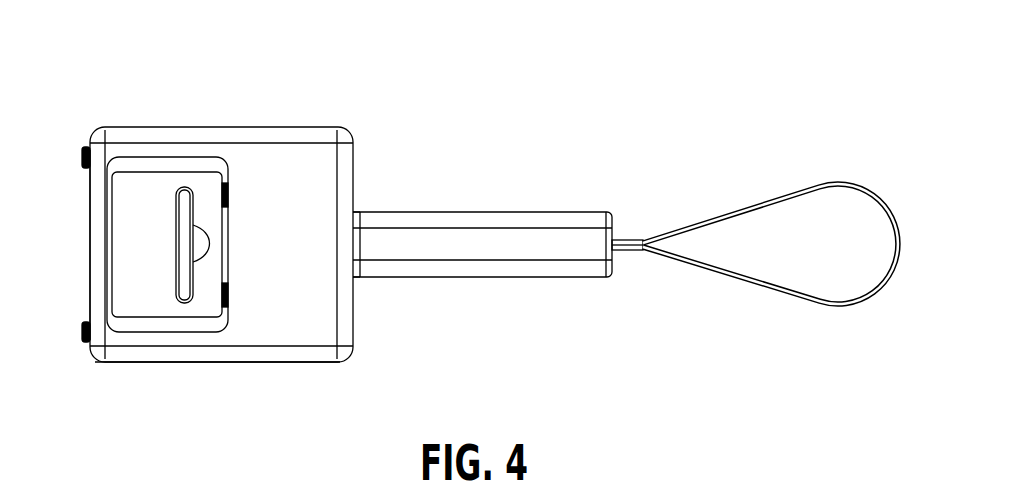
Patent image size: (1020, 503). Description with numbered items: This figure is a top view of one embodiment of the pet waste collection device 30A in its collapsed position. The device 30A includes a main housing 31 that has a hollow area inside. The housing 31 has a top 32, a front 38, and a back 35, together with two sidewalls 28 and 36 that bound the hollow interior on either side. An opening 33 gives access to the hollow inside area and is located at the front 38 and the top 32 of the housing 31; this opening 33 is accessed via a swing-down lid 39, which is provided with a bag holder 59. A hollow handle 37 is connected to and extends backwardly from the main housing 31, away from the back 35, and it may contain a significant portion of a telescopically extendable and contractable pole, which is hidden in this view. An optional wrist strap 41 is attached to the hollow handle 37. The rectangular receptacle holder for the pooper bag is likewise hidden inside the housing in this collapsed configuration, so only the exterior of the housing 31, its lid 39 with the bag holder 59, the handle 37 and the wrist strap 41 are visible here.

The sidewall 28 is at (218, 128).
The pet waste collection device 30A is at (284, 80).
The main housing 31 is at (276, 333).
The top 32 is at (290, 157).
The opening 33 is at (117, 332).
The back 35 is at (352, 178).
The sidewall 36 is at (188, 362).
The hollow handle 37 is at (467, 215).
The front 38 is at (90, 249).
The swing-down lid 39 is at (138, 197).
The wrist strap 41 is at (833, 182).
The bag holder 59 is at (178, 187).